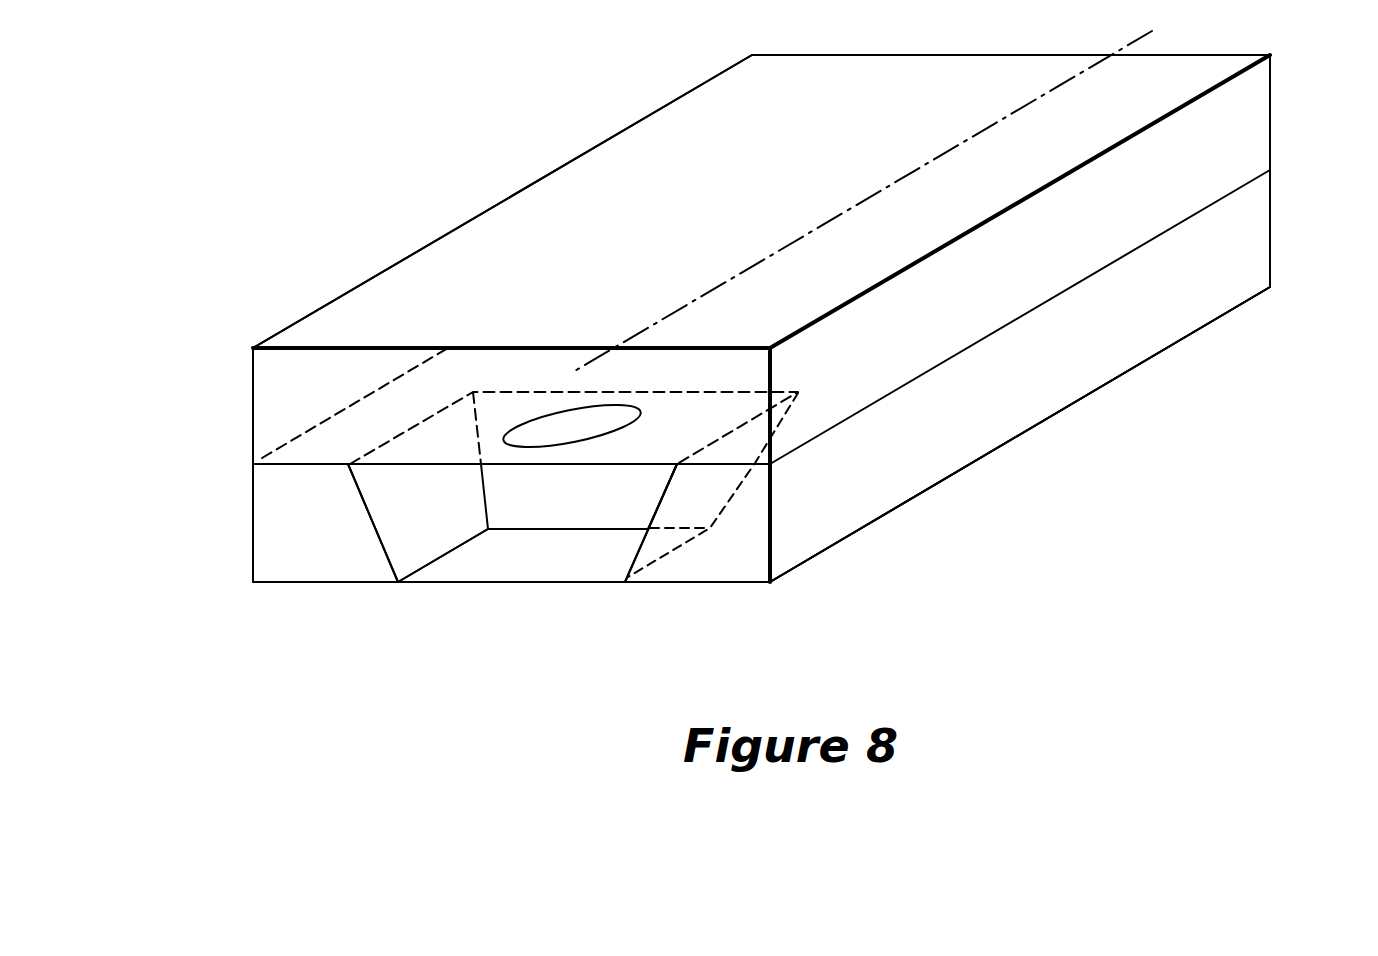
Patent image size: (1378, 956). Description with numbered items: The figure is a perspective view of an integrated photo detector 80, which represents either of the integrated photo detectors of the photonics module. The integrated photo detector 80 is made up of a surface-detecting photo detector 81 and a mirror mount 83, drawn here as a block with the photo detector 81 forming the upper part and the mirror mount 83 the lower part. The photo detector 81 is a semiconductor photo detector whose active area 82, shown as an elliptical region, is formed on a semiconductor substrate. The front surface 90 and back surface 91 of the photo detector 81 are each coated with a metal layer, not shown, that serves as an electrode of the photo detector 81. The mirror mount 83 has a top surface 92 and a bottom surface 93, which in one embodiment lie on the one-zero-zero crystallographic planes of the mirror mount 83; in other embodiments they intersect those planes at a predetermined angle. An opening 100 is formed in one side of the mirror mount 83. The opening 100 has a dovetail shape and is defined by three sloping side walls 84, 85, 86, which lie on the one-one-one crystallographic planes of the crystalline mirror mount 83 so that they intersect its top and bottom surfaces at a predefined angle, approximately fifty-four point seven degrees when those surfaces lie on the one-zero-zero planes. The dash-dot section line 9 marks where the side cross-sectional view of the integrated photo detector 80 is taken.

The integrated photo detector 80 is at (375, 185).
The surface-detecting photo detector 81 is at (252, 413).
The active area 82 is at (640, 413).
The mirror mount 83 is at (1272, 250).
The sloping side wall 84 is at (450, 552).
The sloping side wall 85 is at (578, 530).
The sloping side wall 86 is at (636, 562).
The front surface 90 is at (907, 88).
The back surface 91 is at (328, 463).
The top surface 92 is at (290, 467).
The bottom surface 93 is at (938, 485).
The opening 100 is at (515, 628).
The section line 9— 9 is at (1152, 31).